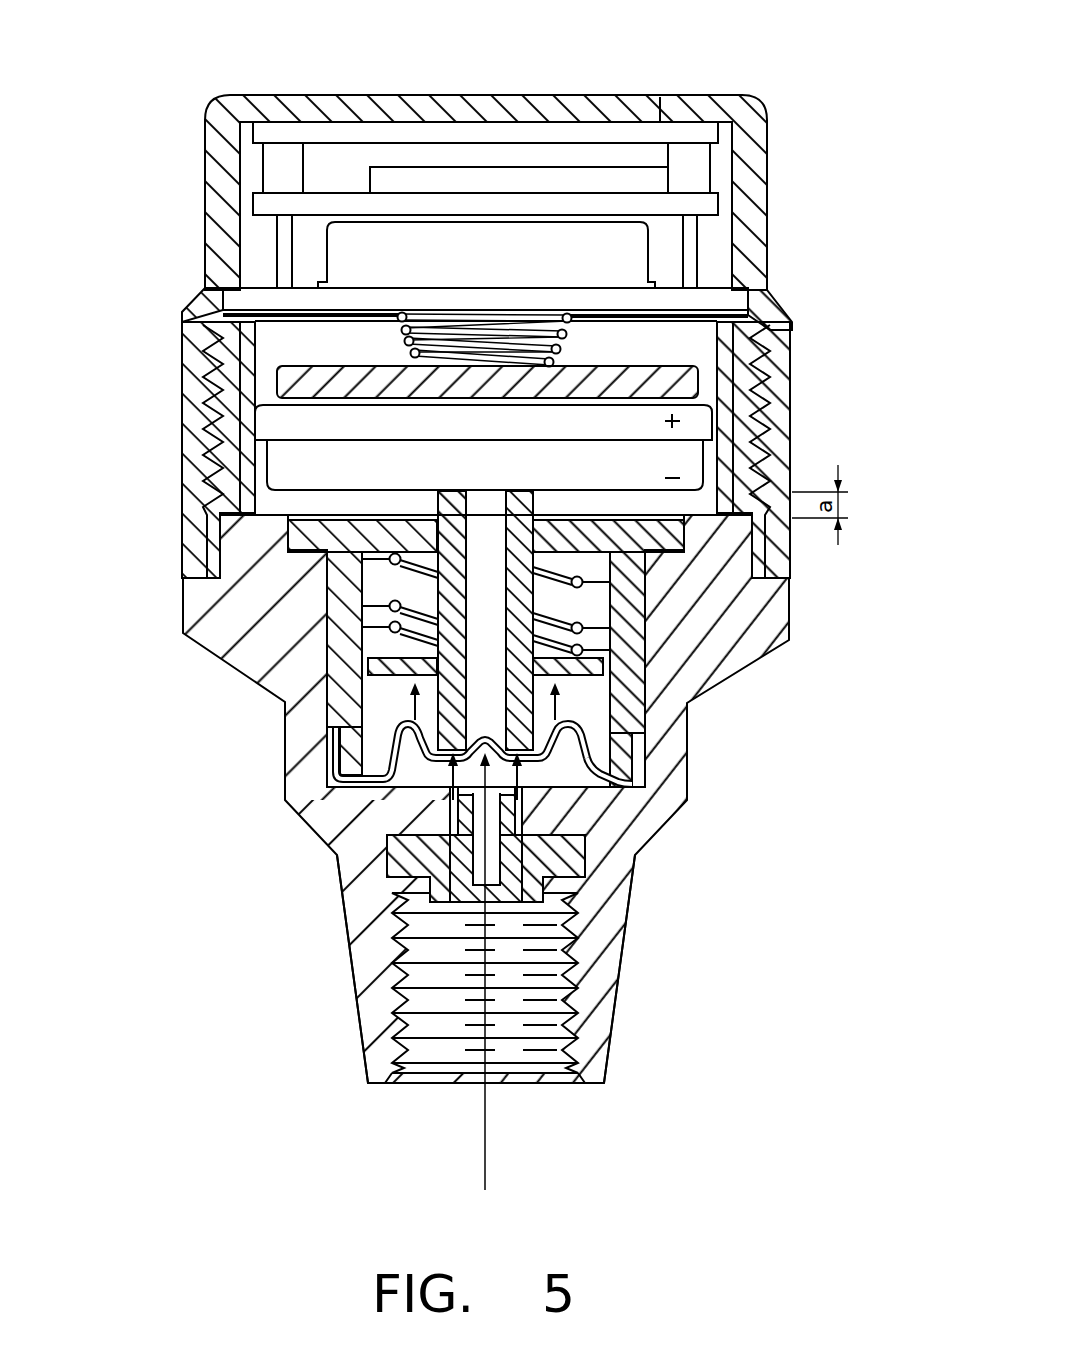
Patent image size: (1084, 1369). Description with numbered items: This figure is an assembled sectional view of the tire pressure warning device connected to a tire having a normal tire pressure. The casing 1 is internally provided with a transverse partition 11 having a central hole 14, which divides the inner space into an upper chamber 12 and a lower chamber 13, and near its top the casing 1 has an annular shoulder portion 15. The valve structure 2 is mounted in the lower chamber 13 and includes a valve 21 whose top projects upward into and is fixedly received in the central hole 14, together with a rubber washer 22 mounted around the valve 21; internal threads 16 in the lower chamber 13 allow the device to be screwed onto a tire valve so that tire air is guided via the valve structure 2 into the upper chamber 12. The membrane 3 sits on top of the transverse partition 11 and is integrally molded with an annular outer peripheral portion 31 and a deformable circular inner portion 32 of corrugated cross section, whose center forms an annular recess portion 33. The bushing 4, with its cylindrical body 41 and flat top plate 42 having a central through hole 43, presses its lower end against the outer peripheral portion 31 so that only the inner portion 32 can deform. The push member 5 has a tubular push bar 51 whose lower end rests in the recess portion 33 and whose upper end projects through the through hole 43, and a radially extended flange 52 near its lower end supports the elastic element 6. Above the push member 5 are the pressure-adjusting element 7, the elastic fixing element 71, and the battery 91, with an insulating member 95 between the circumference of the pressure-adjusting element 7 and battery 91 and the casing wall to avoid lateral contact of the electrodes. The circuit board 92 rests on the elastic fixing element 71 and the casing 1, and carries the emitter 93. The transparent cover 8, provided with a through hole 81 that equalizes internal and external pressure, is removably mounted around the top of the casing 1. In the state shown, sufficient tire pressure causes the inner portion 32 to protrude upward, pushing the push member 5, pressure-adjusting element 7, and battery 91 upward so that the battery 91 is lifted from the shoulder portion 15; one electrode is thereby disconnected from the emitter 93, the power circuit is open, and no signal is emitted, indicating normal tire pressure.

The casing 1 is at (273, 757).
The valve structure 2 is at (498, 866).
The membrane 3 is at (488, 777).
The bushing 4 is at (630, 673).
The push member 5 is at (364, 610).
The elastic element 6 is at (370, 627).
The pressure-adjusting element 7 is at (718, 372).
The cover 8 is at (780, 163).
The transverse partition 11 is at (387, 837).
The upper chamber 12 is at (380, 713).
The lower chamber 13 is at (387, 860).
The central hole 14 is at (427, 825).
The annular shoulder portion 15 is at (262, 522).
The internal threads 16 is at (370, 1008).
The valve 21 is at (590, 903).
The rubber washer 22 is at (586, 866).
The annular outer peripheral portion 31 is at (645, 790).
The deformable circular inner portion 32 is at (595, 842).
The annular recess portion 33 is at (330, 785).
The cylindrical body 41 is at (643, 700).
The flat top plate 42 is at (705, 548).
The central through hole 43 is at (640, 625).
The push bar 51 is at (650, 622).
The radially extended flange 52 is at (377, 667).
The elastic fixing element 71 is at (562, 348).
The through hole 81 is at (660, 105).
The battery 91 is at (622, 432).
The circuit board 92 is at (255, 300).
The emitter 93 is at (353, 252).
The insulating member 95 is at (242, 402).